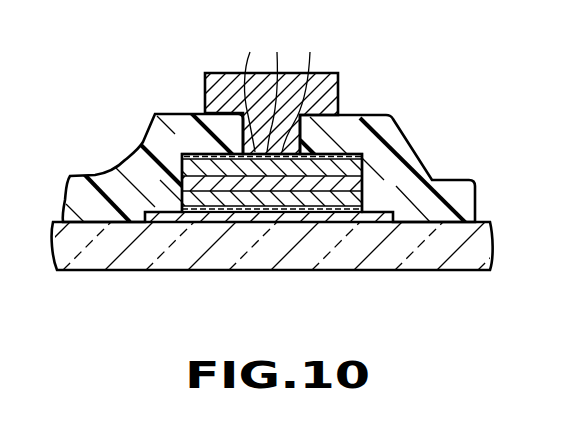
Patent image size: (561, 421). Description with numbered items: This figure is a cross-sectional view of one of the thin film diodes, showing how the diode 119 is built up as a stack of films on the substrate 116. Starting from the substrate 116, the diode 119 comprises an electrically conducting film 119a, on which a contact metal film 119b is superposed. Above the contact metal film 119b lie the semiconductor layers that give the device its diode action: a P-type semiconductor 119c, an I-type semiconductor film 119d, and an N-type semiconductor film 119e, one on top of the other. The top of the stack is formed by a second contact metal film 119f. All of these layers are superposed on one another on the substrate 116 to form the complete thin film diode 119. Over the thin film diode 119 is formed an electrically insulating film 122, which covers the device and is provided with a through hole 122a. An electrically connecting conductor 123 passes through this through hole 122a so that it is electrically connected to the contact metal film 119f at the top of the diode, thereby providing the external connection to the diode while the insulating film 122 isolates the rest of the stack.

The substrate 116 is at (430, 240).
The thin film diode 119 is at (263, 201).
The electrically conducting film 119a is at (347, 214).
The contact metal film 119b is at (297, 200).
The P-type semiconductor 119c is at (245, 192).
The I-type semiconductor film 119d is at (197, 188).
The N-type semiconductor film 119e is at (153, 207).
The contact metal film 119f is at (353, 154).
The electrically insulating film 122 is at (170, 120).
The through hole 122a is at (328, 113).
The electrically connecting conductor 123 is at (222, 78).